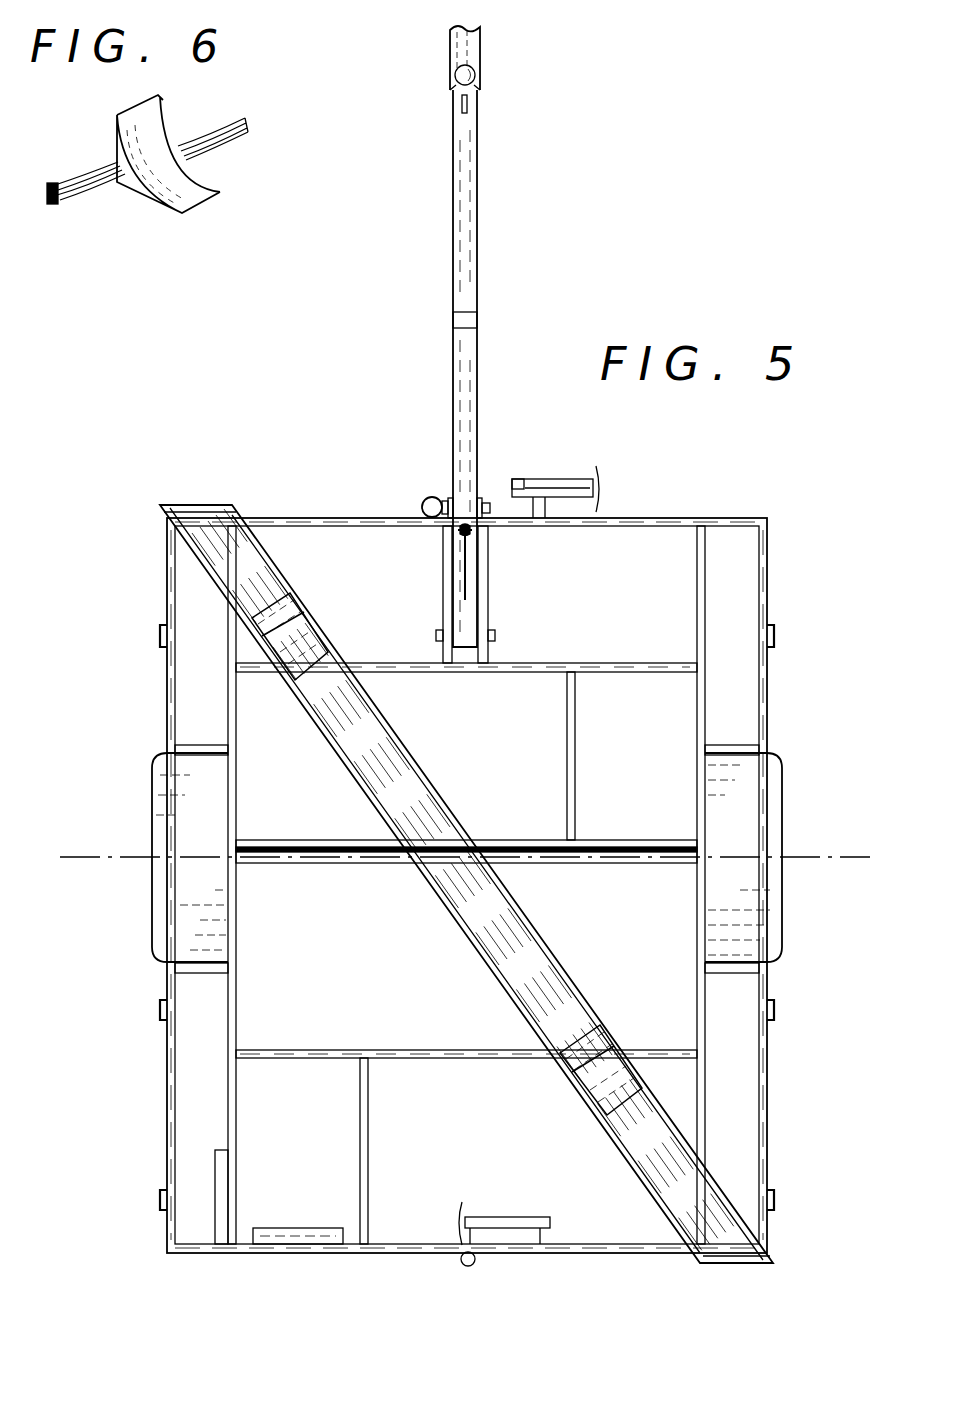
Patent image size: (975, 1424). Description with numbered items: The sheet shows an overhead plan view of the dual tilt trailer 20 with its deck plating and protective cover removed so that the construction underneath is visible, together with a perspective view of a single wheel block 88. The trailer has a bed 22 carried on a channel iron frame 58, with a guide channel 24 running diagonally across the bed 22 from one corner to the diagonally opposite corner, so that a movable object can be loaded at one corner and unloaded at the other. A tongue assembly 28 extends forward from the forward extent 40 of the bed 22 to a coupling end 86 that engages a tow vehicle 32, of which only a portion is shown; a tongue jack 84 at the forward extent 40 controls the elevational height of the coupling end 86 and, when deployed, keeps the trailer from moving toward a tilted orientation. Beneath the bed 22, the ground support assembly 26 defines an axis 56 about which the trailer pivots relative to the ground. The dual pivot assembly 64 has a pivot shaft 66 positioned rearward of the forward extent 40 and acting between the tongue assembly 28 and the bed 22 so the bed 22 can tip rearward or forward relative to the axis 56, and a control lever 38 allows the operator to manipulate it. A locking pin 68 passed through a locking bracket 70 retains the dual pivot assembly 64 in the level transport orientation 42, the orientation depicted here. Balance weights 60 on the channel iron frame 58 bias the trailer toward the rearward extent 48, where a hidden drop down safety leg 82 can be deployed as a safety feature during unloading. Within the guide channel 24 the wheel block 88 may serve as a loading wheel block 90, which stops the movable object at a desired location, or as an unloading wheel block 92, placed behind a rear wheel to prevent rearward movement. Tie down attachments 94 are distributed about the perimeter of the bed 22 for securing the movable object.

In FIG. 5, the dual tilt trailer 20 is at (813, 438).
In FIG. 5, the bed 22 is at (208, 505).
In FIG. 5, the guide channel 24 is at (741, 1264).
In FIG. 5, the ground support assembly 26 is at (347, 863).
In FIG. 5, the tongue assembly 28 is at (478, 202).
In FIG. 5, the tow vehicle 32 is at (481, 33).
In FIG. 5, the control lever 38 is at (465, 565).
In FIG. 5, the forward extent 40 is at (308, 518).
In FIG. 5, the level transport orientation 42 is at (821, 542).
In FIG. 5, the rearward extent 48 is at (418, 1253).
In FIG. 5, the axis 56 is at (806, 858).
In FIG. 5, the channel iron frame 58 is at (767, 700).
In FIG. 5, the balance weights 60 is at (213, 1197).
In FIG. 5, the dual pivot assembly 64 is at (480, 540).
In FIG. 5, the pivot shaft 66 is at (480, 622).
In FIG. 5, the locking pin 68 is at (438, 497).
In FIG. 5, the locking bracket 70 is at (449, 497).
In FIG. 5, the hidden drop down safety leg 82 is at (504, 1217).
In FIG. 5, the tongue jack 84 is at (562, 479).
In FIG. 5, the coupling end 86 is at (456, 78).
In FIG. 6, the wheel block 88 is at (198, 172).
In FIG. 5, the wheel block 88 is at (300, 615).
In FIG. 5, the loading wheel block 90 is at (313, 633).
In FIG. 5, the unloading wheel block 92 is at (580, 1083).
In FIG. 5, the tie down attachments 94 is at (160, 1010).